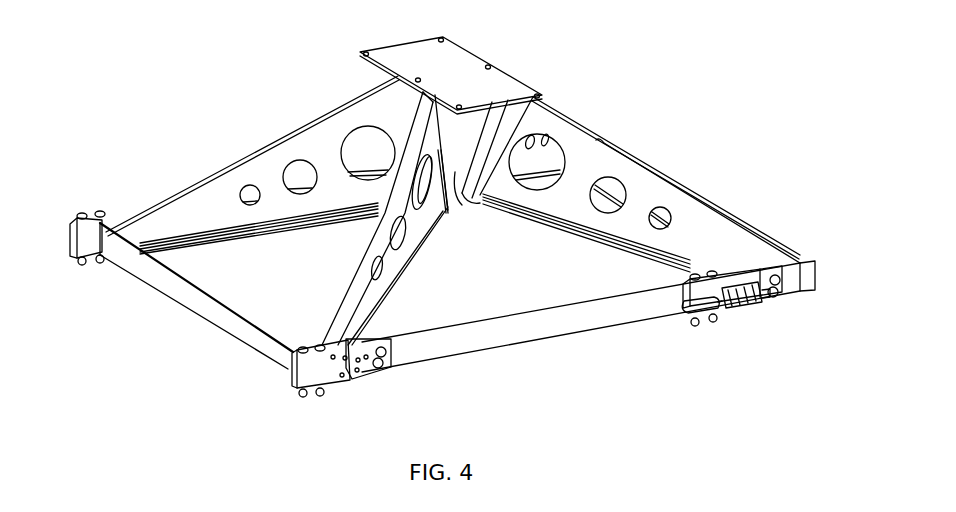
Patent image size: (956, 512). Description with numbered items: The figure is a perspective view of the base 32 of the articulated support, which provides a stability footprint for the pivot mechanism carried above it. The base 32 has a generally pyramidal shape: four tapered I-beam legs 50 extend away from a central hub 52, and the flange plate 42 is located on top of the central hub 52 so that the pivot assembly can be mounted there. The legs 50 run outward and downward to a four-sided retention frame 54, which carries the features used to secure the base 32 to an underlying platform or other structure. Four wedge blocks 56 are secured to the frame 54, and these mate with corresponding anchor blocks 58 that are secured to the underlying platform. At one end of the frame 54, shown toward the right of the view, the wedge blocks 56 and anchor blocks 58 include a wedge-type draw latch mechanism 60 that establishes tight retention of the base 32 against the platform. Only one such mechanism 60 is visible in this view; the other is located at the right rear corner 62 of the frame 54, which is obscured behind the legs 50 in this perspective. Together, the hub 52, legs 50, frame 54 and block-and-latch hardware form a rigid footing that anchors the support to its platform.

The base 32 is at (184, 331).
The flange plate 42 is at (461, 60).
The tapered I-beam legs 50 is at (262, 144).
The central hub 52 is at (456, 180).
The retention frame 54 is at (535, 334).
The wedge blocks 56 is at (386, 354).
The anchor blocks 58 is at (117, 212).
The wedge-type draw latch mechanism 60 is at (740, 322).
The right rear corner 62 is at (622, 129).